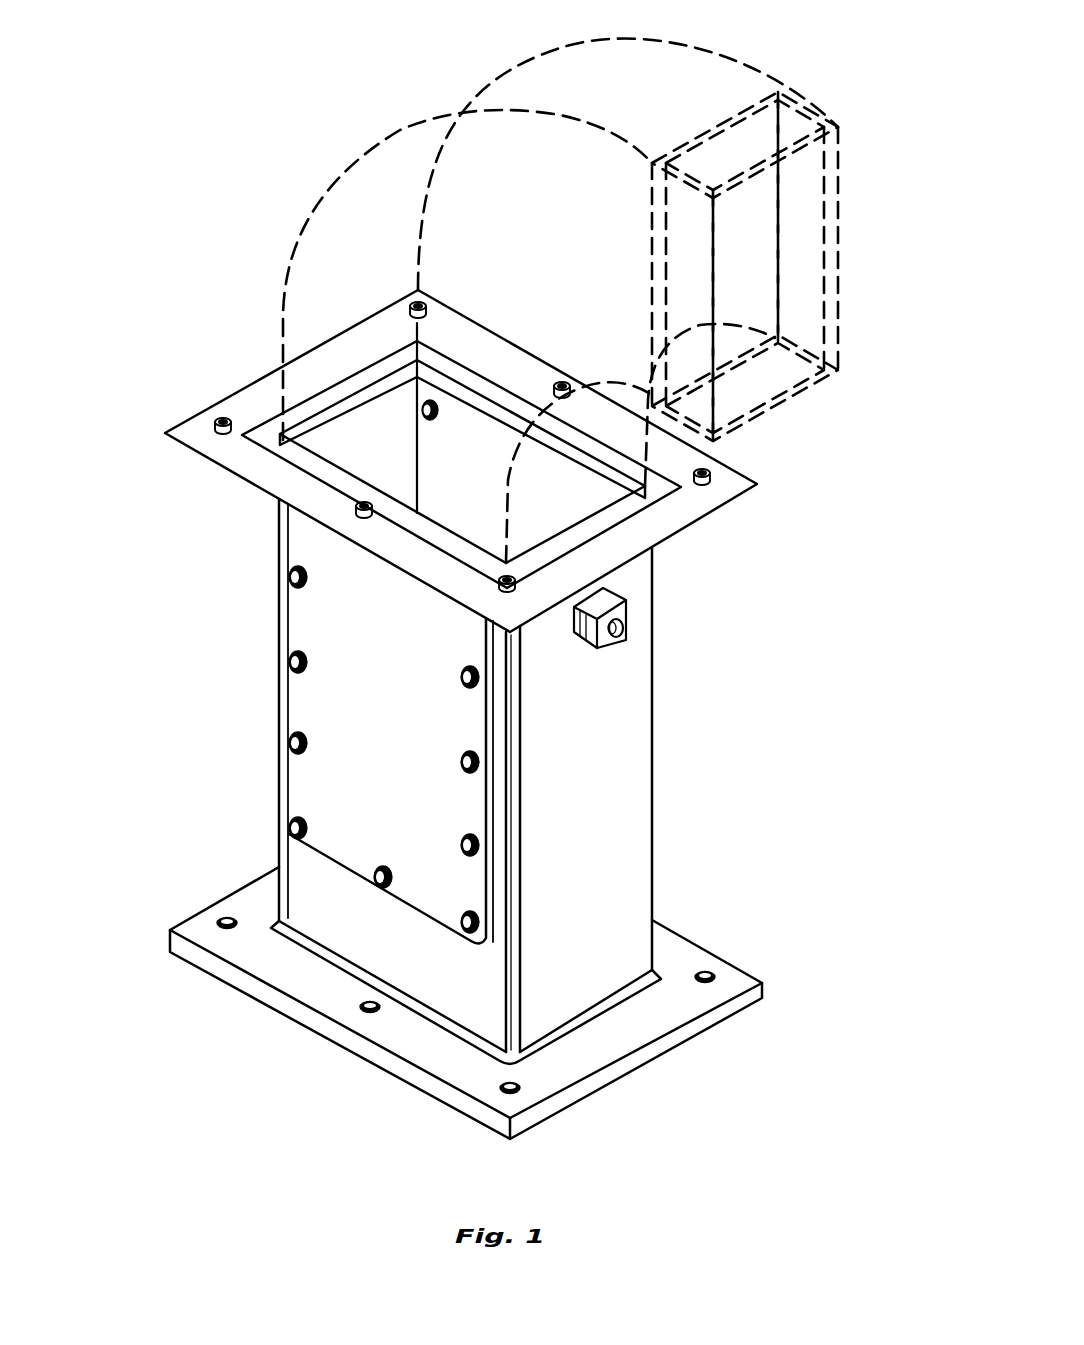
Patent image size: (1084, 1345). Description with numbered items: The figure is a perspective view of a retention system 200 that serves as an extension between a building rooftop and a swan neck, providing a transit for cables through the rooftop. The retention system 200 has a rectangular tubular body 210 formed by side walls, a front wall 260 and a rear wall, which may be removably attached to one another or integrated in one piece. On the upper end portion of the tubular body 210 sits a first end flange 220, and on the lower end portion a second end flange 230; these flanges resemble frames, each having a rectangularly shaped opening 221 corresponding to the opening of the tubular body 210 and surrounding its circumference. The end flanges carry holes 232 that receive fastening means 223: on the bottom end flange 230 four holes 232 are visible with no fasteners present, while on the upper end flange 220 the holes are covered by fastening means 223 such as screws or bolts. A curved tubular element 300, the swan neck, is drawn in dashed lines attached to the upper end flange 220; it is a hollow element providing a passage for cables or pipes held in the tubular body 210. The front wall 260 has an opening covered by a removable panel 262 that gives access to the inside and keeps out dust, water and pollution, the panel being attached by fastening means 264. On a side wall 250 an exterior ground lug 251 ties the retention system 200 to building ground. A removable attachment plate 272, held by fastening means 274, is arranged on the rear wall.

The retention system 200 is at (790, 445).
The tubular body 210 is at (620, 748).
The first end flange 220 is at (252, 405).
The rectangularly shaped opening 221 is at (383, 403).
The fastening means 223 is at (216, 418).
The second end flange 230 is at (296, 988).
The holes 232 is at (512, 1090).
The side wall 250 is at (612, 863).
The exterior ground lug 251 is at (620, 630).
The front wall 260 is at (302, 885).
The removable panel 262 is at (302, 712).
The fastening means 264 is at (294, 576).
The removable attachment plate 272 is at (455, 483).
The fastening means 274 is at (382, 402).
The curved tubular element 300 is at (470, 92).